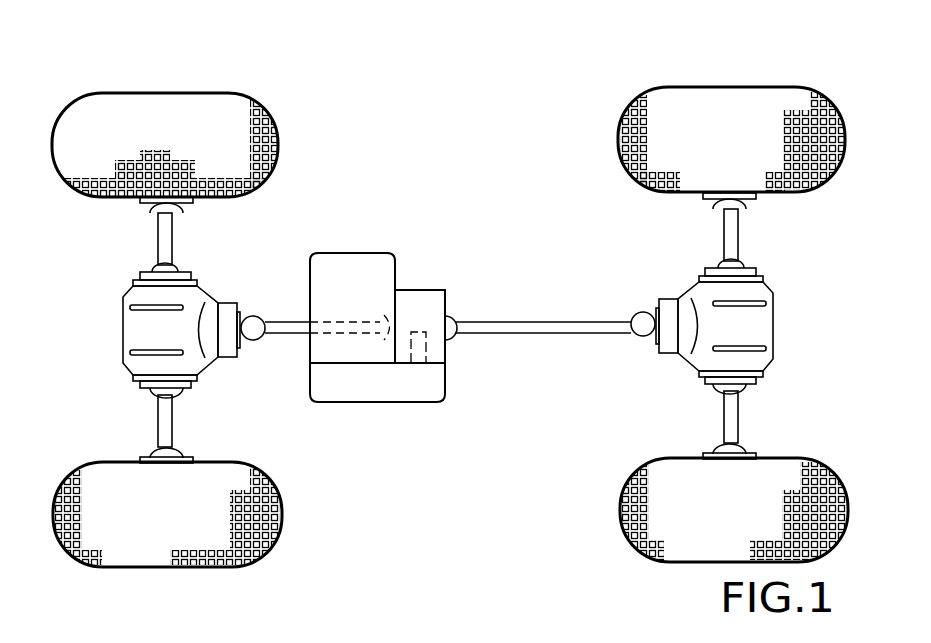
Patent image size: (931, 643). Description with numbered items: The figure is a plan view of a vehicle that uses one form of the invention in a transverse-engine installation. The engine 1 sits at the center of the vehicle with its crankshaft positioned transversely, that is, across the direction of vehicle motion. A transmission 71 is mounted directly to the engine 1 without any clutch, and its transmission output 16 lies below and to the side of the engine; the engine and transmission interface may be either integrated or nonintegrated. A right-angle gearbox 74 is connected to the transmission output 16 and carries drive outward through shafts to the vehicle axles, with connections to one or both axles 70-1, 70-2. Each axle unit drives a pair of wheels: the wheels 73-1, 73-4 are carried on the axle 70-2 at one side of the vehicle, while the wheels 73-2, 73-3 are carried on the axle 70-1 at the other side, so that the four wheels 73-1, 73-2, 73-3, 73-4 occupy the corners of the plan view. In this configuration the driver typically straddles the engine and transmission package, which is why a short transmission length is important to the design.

The engine 1 is at (368, 260).
The transmission output 16 is at (423, 342).
The transmission 71 is at (432, 378).
The right-angle gearbox 74 is at (420, 300).
The axle 70-1 is at (730, 412).
The axle 70-2 is at (168, 420).
The wheel 73-1 is at (243, 98).
The wheel 73-2 is at (667, 103).
The wheel 73-3 is at (663, 460).
The wheel 73-4 is at (243, 468).